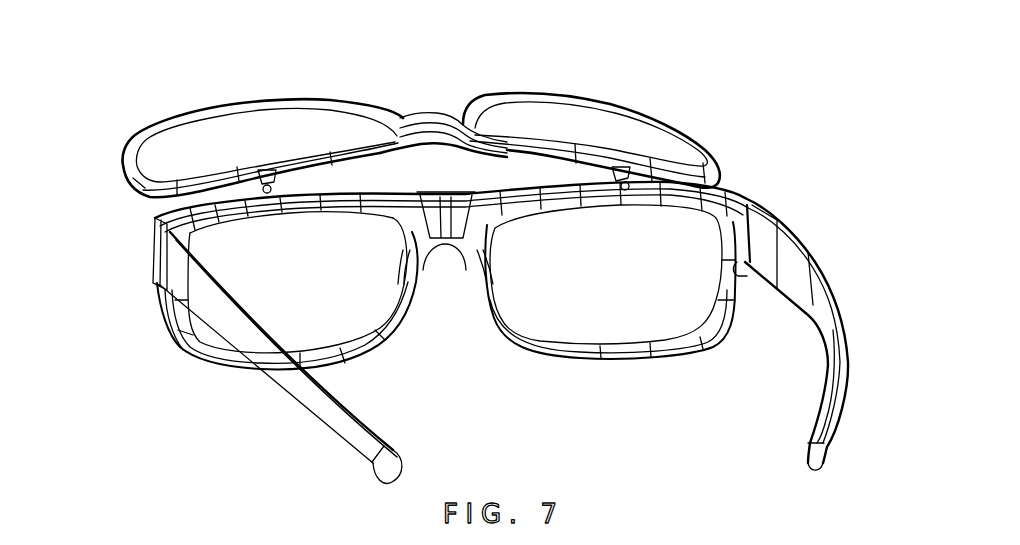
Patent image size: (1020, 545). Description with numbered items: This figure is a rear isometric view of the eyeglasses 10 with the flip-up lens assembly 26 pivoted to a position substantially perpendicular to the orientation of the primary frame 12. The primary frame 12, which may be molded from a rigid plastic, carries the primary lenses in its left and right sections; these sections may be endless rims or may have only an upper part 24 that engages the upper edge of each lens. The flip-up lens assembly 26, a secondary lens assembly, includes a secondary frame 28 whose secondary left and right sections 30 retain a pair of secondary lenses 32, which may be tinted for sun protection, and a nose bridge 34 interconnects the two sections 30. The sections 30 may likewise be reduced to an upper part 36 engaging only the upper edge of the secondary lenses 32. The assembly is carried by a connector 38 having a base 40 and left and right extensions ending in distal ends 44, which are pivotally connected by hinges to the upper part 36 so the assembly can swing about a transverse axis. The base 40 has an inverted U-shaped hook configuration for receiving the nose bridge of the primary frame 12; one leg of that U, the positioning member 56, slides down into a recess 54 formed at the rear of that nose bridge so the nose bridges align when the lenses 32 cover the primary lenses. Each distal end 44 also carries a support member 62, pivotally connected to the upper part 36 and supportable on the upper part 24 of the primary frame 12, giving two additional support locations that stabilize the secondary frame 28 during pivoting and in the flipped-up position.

The eyeglasses 10 is at (730, 68).
The primary frame 12 is at (735, 192).
The upper part 24 is at (389, 214).
The flip-up lens assembly 26 is at (147, 70).
The secondary frame 28 is at (393, 112).
The secondary left and right sections 30 is at (138, 138).
The secondary lenses 32 is at (277, 112).
The nose bridge 34 is at (442, 112).
The upper part 36 is at (243, 165).
The connector 38 is at (381, 192).
The base 40 is at (449, 194).
The left and right distal ends 44 is at (267, 177).
The recess 54 is at (463, 262).
The positioning member 56 is at (445, 244).
The support member 62 is at (268, 213).